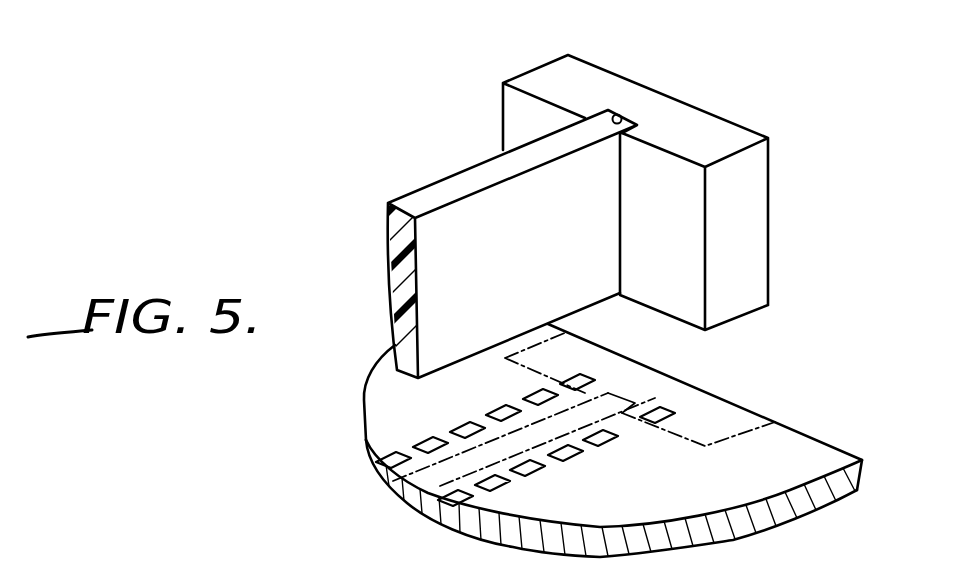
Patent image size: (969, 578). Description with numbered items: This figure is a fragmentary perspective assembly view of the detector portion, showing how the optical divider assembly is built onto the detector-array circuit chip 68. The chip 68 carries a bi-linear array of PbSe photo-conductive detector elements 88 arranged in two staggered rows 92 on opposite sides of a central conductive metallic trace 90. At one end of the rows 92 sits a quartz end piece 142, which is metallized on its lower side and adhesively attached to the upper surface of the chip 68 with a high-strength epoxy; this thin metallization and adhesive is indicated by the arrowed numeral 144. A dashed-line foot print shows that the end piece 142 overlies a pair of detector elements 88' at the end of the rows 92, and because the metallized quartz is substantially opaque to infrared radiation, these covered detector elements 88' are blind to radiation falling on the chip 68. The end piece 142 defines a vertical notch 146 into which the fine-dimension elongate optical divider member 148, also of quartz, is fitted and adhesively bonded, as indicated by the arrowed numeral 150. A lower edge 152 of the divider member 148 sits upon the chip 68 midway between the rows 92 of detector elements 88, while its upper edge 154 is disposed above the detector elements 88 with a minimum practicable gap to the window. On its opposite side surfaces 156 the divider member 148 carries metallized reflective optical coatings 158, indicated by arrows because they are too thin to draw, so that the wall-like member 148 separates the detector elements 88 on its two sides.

The detector-array circuit chip 68 is at (805, 170).
The detector elements 88 is at (497, 440).
The covered pair of detector elements 88' is at (640, 389).
The central conductive metallic trace 90 is at (423, 478).
The rows of detector elements 92 is at (397, 442).
The end pieces 142 is at (712, 120).
The metallization and adhesive 144 is at (738, 322).
The vertical notch 146 is at (625, 120).
The optical divider member 148 is at (594, 259).
The adhesive bond 150 is at (597, 112).
The lower edge 152 is at (393, 356).
The upper edge 154 is at (454, 175).
The side surfaces 156 is at (440, 274).
The metallized reflective optical coatings 158 is at (517, 238).